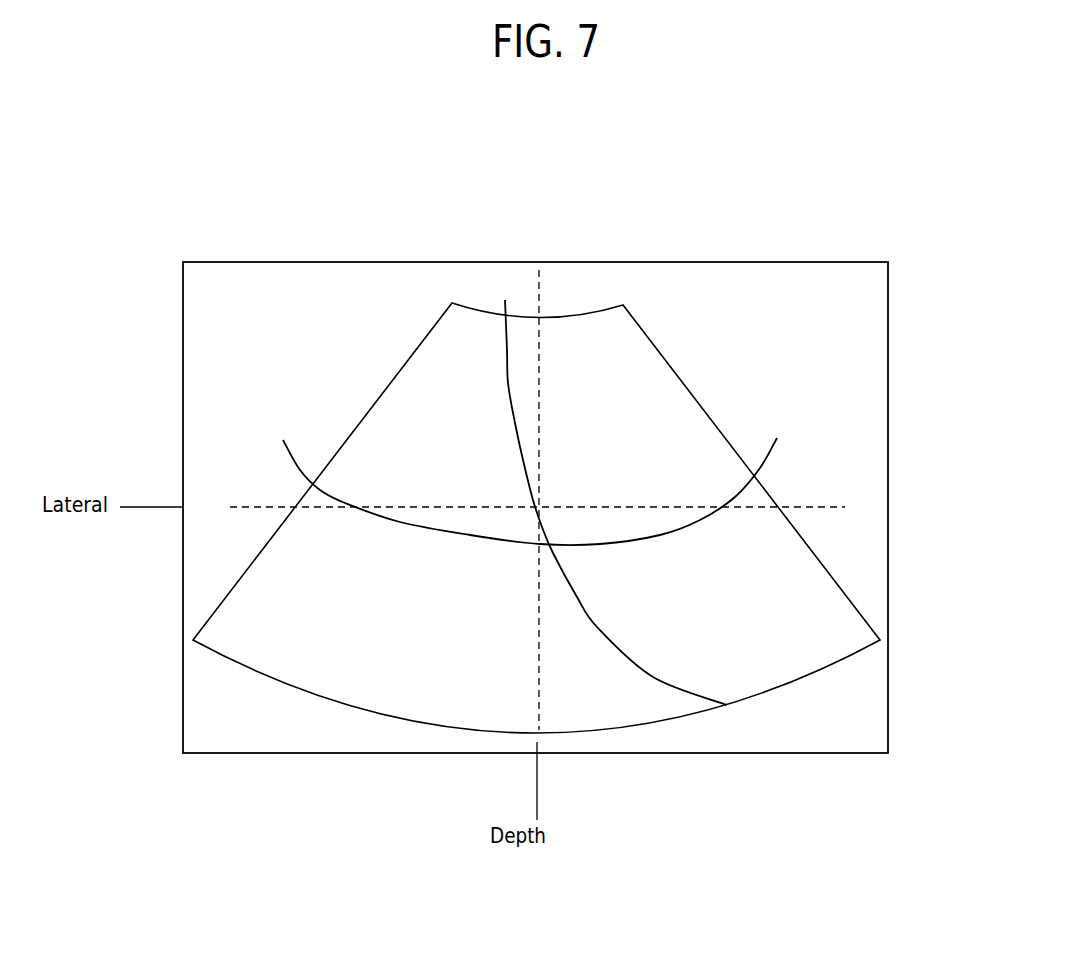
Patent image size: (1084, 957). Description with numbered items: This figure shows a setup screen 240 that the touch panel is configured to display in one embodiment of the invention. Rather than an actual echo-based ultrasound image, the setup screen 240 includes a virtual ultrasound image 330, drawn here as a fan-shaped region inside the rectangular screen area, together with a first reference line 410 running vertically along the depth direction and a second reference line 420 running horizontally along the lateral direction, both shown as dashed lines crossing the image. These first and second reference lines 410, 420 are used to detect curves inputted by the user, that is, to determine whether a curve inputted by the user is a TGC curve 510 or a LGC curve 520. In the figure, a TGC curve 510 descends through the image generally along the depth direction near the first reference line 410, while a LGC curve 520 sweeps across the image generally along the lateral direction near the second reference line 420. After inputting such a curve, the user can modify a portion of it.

The setup screen 240 is at (483, 206).
The virtual ultrasound image 330 is at (691, 394).
The first reference line 410 is at (540, 301).
The second reference line 420 is at (826, 519).
The TGC curve 510 is at (666, 690).
The LGC curve 520 is at (779, 457).